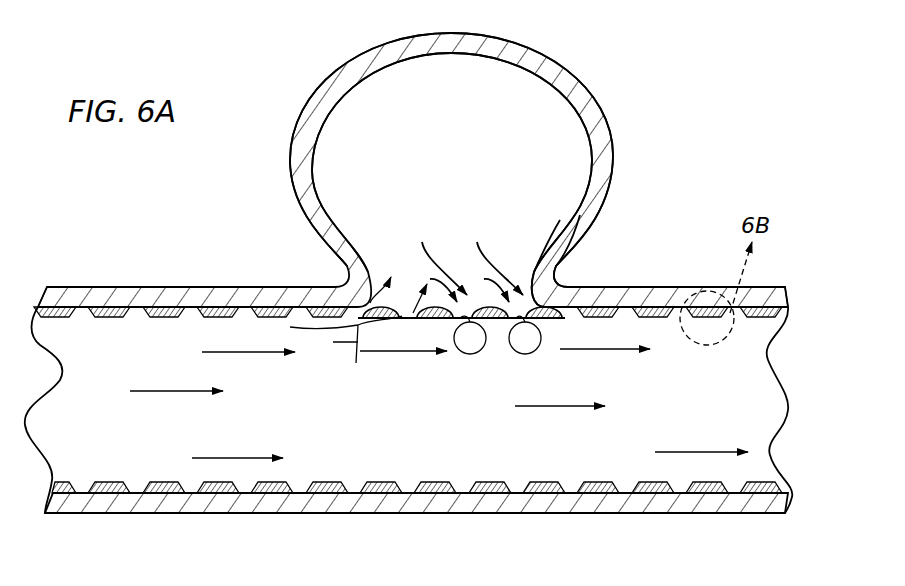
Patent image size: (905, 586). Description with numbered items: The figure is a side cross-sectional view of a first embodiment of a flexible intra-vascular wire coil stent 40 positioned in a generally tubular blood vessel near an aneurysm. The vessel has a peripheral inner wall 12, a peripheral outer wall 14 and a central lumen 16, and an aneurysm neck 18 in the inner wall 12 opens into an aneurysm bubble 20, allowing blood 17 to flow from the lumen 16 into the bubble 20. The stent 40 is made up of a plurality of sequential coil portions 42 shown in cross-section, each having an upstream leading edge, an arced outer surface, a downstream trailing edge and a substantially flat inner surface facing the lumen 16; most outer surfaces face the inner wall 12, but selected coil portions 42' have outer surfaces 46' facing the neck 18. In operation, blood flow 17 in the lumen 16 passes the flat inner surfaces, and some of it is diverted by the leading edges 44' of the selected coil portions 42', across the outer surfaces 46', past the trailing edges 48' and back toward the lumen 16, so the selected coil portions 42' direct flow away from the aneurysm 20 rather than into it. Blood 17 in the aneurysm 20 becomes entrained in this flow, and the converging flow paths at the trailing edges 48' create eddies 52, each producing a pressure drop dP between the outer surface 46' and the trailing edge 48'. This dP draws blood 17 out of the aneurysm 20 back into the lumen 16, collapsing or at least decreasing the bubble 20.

The flexible intra-vascular wire coil stent 40 is at (182, 258).
The peripheral outer wall 14 is at (147, 286).
The peripheral inner wall 12 is at (87, 487).
The central lumen 16 is at (72, 402).
The blood flow 17 is at (422, 242).
The aneurysm neck 18 is at (522, 260).
The aneurysm bubble 20 is at (533, 110).
The coil portions 42 is at (408, 408).
The selected coil portions 42' is at (428, 288).
The leading edges 44' is at (346, 345).
The outer surfaces 46' is at (391, 272).
The trailing edges 48' is at (426, 314).
The eddies 52 is at (468, 355).